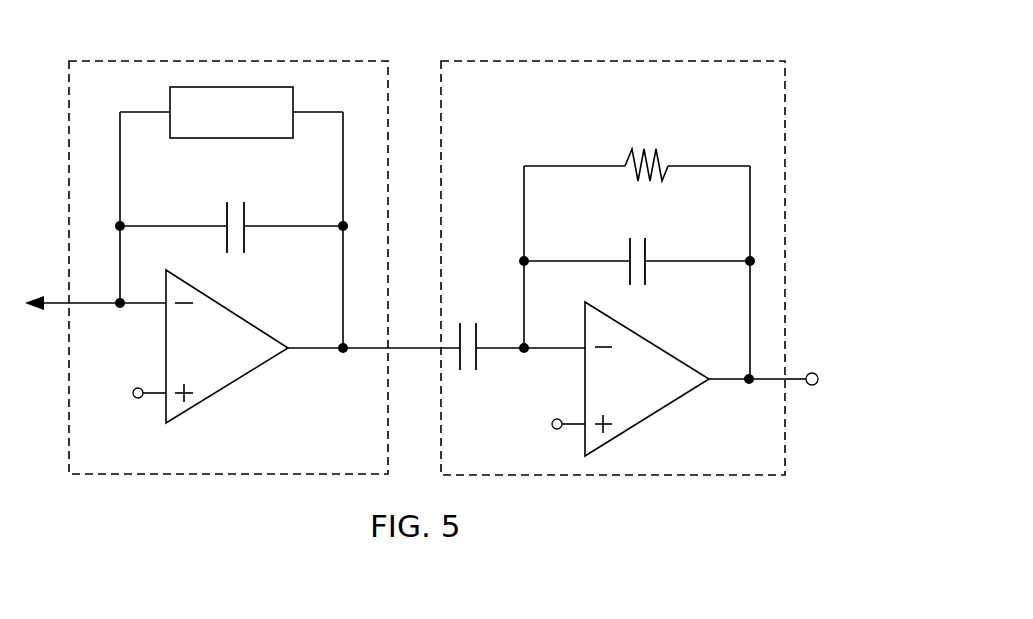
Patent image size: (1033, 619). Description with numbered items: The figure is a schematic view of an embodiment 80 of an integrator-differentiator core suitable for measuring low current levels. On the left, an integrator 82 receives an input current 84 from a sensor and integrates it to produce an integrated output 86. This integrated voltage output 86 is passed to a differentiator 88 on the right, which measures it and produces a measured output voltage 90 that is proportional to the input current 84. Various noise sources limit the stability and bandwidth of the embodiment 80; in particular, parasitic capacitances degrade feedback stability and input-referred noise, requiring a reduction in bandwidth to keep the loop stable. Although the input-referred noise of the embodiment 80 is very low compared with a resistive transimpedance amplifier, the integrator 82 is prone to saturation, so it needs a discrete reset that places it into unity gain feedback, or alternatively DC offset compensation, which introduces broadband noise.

The integrator-differentiator core embodiment 80 is at (693, 38).
The integrator 82 is at (104, 93).
The input current 84 is at (51, 301).
The integrated output 86 is at (404, 347).
The differentiator 88 is at (479, 93).
The measured output voltage 90 is at (801, 376).